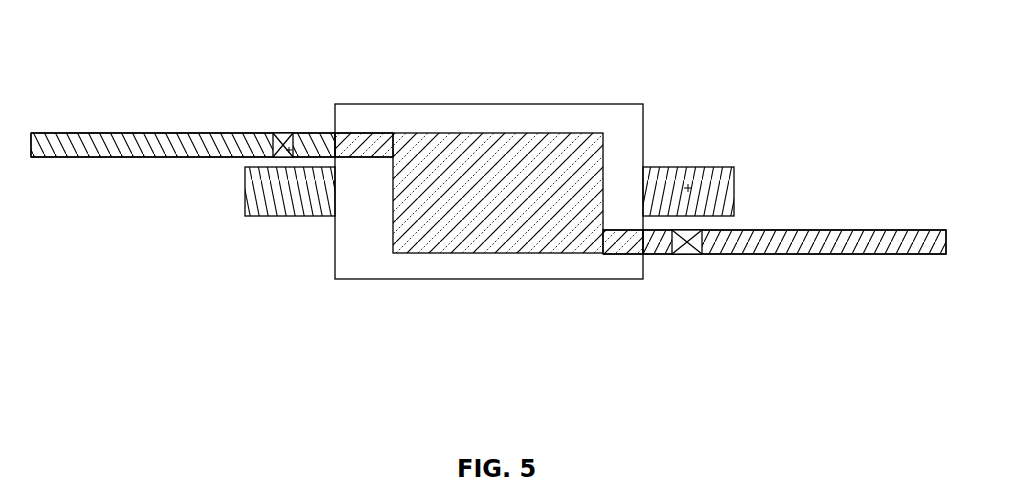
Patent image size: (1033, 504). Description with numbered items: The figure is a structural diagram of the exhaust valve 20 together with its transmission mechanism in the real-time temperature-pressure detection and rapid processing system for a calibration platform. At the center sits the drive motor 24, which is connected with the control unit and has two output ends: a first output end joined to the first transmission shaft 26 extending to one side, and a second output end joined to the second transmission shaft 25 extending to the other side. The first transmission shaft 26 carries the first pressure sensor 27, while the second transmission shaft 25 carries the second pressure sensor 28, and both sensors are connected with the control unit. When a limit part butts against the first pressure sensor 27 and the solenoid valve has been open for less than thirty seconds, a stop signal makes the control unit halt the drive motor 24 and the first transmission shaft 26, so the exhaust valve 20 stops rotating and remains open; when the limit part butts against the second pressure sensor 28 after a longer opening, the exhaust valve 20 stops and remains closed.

The exhaust valve 20 is at (382, 262).
The drive motor 24 is at (500, 178).
The second transmission shaft 25 is at (822, 231).
The first transmission shaft 26 is at (165, 135).
The first pressure sensor 27 is at (284, 133).
The second pressure sensor 28 is at (686, 255).